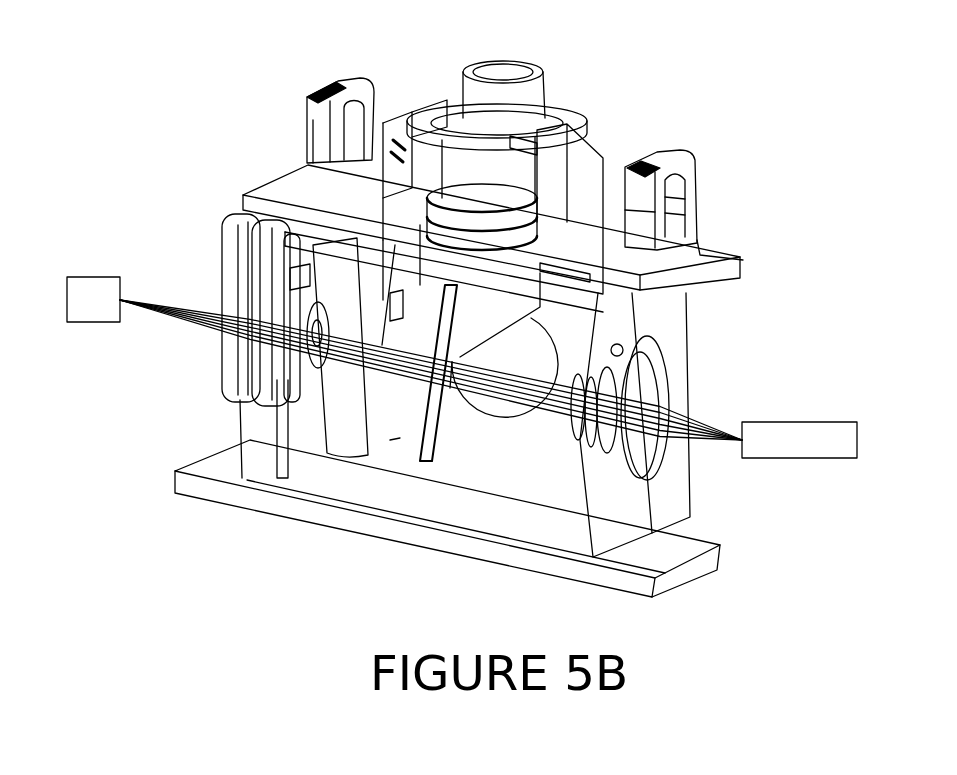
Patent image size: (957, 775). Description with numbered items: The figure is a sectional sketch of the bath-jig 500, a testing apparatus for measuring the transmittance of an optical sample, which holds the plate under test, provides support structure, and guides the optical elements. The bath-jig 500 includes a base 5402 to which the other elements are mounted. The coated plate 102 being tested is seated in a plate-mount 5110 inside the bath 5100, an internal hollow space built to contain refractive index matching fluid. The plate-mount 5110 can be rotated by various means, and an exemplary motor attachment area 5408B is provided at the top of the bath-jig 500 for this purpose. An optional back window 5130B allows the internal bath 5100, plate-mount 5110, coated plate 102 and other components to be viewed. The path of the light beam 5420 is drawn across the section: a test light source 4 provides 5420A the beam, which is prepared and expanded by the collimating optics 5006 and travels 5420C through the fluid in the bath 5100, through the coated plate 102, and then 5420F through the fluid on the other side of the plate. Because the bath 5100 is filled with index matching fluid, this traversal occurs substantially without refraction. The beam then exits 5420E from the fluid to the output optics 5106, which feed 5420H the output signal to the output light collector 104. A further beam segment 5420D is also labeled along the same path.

The bath-jig 500 is at (262, 76).
The motor attachment area 5408B is at (463, 160).
The collimating optics 5006 is at (298, 317).
The back window 5130B is at (513, 350).
The output optics 5106 is at (598, 385).
The base 5402 is at (265, 458).
The plate-mount 5110 is at (440, 312).
The coated plate 102 is at (430, 440).
The bath 5100 is at (465, 455).
The test light source 4 is at (93, 299).
The output light collector 104 is at (799, 440).
The light beam 5420 is at (147, 341).
The provided light beam 5420A is at (188, 316).
The light beam traveling through fluid 5420C is at (378, 350).
The light beam 5420D is at (342, 352).
The exiting light beam 5420E is at (597, 398).
The light beam through fluid on other side 5420F is at (567, 403).
The fed output signal 5420H is at (665, 425).